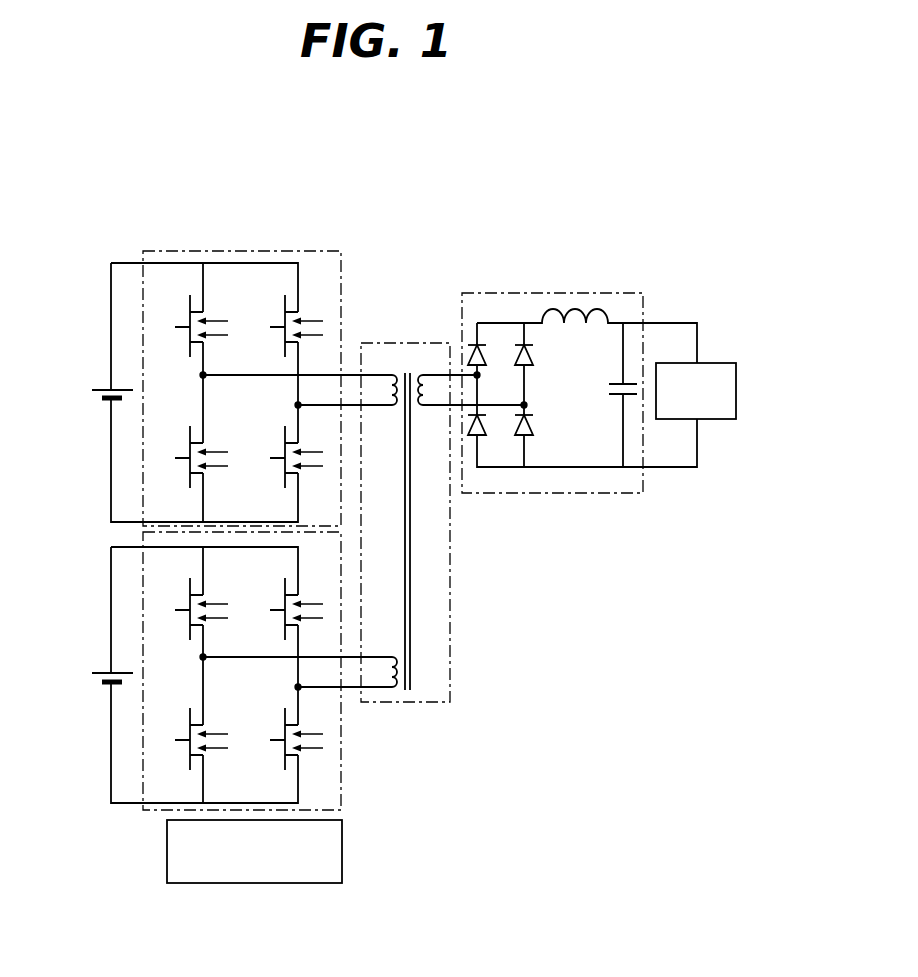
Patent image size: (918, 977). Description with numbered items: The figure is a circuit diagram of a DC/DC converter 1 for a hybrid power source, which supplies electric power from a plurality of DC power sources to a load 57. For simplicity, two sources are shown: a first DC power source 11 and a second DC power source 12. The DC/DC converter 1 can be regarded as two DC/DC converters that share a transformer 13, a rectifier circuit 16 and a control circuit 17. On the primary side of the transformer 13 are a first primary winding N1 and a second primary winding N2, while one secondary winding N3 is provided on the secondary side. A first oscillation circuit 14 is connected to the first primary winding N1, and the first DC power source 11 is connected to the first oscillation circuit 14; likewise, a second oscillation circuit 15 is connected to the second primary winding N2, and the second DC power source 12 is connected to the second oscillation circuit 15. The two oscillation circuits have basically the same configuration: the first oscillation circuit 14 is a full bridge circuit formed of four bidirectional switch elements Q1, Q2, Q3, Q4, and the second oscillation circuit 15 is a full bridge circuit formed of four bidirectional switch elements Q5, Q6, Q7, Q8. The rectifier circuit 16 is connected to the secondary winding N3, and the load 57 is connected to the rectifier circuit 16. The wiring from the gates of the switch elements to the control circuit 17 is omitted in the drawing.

The DC/DC converter 1 is at (408, 203).
The first DC power source 11 is at (100, 385).
The second DC power source 12 is at (100, 668).
The transformer 13 is at (450, 618).
The first oscillation circuit 14 is at (233, 251).
The second oscillation circuit 15 is at (342, 785).
The rectifier circuit 16 is at (537, 293).
The control circuit 17 is at (342, 845).
The load 57 is at (720, 363).
The bidirectional switch element Q1 is at (172, 301).
The bidirectional switch element Q2 is at (262, 301).
The bidirectional switch element Q3 is at (172, 432).
The bidirectional switch element Q4 is at (262, 432).
The bidirectional switch element Q5 is at (172, 584).
The bidirectional switch element Q6 is at (262, 584).
The bidirectional switch element Q7 is at (172, 714).
The bidirectional switch element Q8 is at (262, 714).
The first primary winding N1 is at (300, 409).
The second primary winding N2 is at (300, 653).
The secondary winding N3 is at (469, 409).